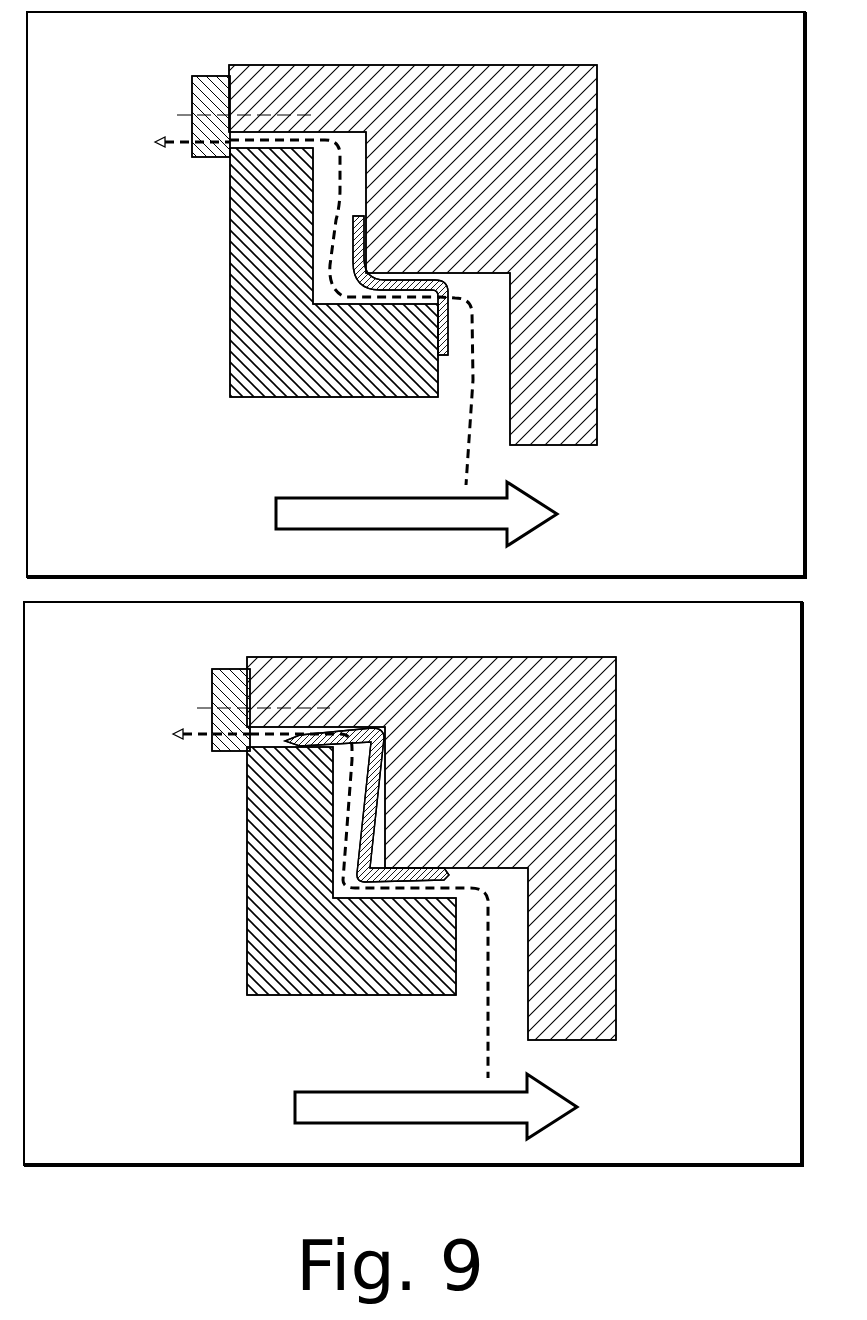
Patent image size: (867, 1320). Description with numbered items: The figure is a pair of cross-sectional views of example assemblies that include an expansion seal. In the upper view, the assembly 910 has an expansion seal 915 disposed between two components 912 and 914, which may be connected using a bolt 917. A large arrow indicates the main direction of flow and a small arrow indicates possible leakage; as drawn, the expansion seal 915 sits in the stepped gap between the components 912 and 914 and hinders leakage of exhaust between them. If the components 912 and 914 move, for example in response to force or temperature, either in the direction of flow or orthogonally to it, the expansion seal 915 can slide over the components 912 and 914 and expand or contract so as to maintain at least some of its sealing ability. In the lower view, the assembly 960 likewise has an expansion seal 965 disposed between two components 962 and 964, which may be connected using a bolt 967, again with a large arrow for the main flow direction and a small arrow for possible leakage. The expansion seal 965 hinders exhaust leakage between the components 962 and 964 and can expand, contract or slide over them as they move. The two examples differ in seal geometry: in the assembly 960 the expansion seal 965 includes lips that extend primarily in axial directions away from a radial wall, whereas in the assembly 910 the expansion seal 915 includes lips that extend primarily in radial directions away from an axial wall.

The assembly 910 is at (692, 69).
The component 912 is at (294, 358).
The component 914 is at (460, 193).
The expansion seal 915 is at (448, 358).
The bolt 917 is at (192, 92).
The assembly 960 is at (708, 656).
The component 962 is at (312, 950).
The component 964 is at (479, 785).
The expansion seal 965 is at (449, 875).
The bolt 967 is at (212, 688).